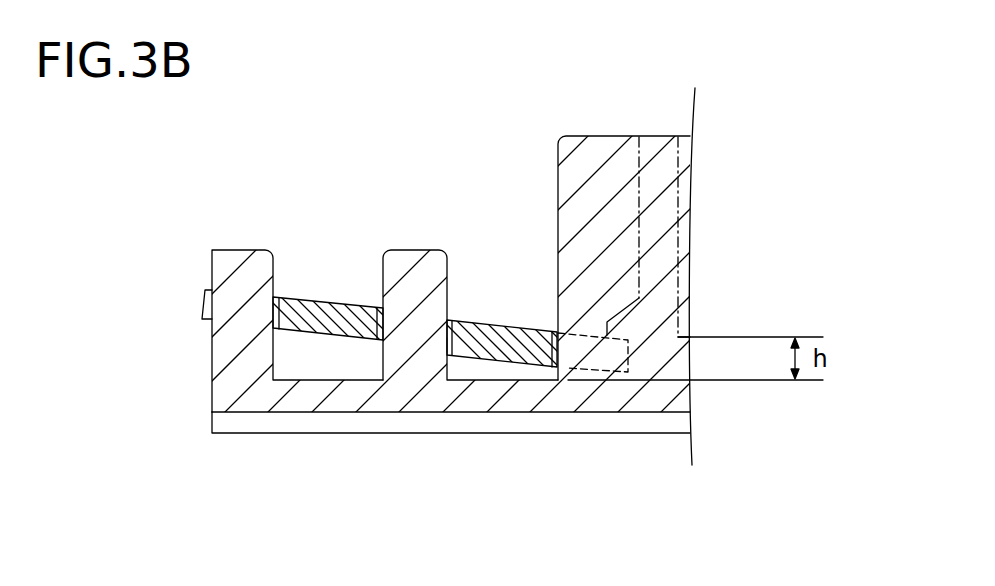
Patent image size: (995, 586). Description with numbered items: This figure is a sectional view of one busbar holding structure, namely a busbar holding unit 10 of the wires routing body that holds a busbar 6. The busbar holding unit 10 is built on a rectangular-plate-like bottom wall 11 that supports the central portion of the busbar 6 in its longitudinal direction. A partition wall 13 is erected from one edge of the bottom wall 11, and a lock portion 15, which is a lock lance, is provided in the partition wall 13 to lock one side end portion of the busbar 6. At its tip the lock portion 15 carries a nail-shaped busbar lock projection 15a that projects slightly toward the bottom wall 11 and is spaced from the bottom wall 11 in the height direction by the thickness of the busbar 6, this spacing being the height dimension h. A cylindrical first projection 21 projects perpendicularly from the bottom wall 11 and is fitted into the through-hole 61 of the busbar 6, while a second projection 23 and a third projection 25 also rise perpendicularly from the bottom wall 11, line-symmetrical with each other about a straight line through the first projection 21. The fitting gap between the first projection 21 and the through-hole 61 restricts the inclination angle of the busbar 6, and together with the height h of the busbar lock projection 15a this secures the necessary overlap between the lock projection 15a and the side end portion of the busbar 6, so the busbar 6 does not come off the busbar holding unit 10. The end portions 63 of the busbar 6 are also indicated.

The busbar holding unit 10 is at (264, 438).
The bottom wall 11 is at (333, 402).
The partition wall 13 is at (661, 135).
The lock portion 15 is at (634, 239).
The busbar lock projection 15a is at (612, 318).
The first projection 21 is at (409, 258).
The second projection 23 is at (237, 262).
The third projection 25 is at (567, 175).
The busbar 6 is at (321, 296).
The through-hole 61 is at (420, 345).
The bus bar end portion 63 is at (273, 307).